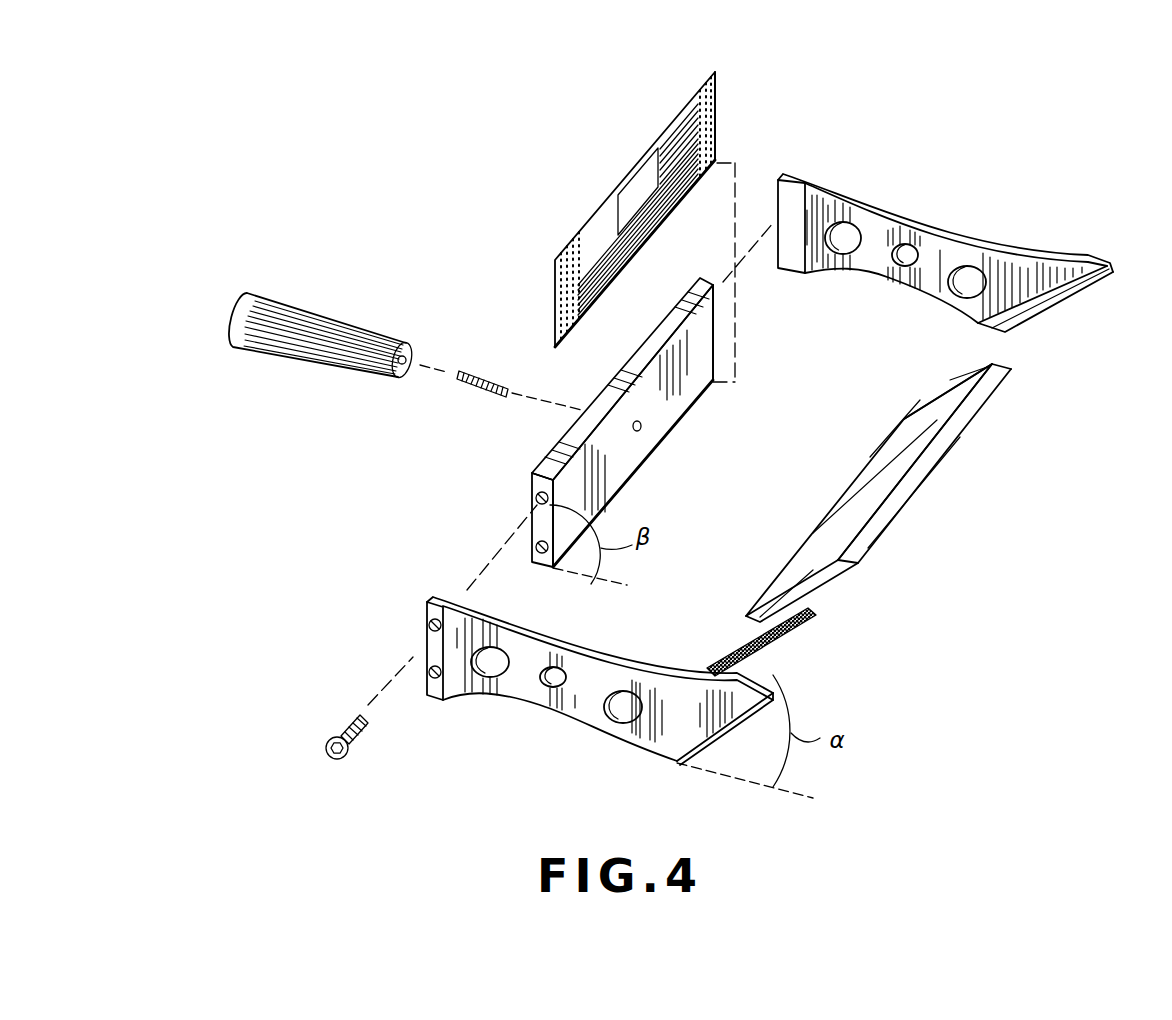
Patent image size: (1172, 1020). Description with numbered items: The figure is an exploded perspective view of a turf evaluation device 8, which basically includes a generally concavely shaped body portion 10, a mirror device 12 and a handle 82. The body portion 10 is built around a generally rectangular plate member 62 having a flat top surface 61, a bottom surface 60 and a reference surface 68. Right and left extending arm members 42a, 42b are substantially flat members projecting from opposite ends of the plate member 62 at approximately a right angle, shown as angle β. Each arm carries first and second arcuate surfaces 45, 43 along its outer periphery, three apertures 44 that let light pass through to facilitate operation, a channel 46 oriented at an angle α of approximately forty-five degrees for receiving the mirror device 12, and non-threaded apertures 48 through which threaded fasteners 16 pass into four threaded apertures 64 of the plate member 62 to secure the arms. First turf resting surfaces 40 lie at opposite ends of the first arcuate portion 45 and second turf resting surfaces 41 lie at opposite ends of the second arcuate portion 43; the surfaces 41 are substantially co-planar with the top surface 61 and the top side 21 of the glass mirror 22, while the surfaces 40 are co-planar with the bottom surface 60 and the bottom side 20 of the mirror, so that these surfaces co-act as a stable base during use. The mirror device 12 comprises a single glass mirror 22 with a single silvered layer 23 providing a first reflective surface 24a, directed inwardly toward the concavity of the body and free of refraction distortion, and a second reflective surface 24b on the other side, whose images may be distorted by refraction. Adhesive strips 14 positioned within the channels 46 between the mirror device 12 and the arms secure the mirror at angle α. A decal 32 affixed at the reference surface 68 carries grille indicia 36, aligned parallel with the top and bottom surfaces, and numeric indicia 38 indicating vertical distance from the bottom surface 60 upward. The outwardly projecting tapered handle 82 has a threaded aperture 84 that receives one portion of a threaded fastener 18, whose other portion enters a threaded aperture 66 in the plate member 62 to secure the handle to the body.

The turf evaluation device 8 is at (646, 118).
The body portion 10 is at (1078, 141).
The mirror device 12 is at (884, 540).
The adhesive strips 14 is at (733, 657).
The threaded fasteners 16 is at (327, 735).
The threaded fastener 18 is at (478, 374).
The bottom side of mirror 20 is at (742, 628).
The top side of mirror 21 is at (977, 402).
The glass mirror 22 is at (963, 435).
The silvered layer 23 is at (1000, 368).
The first reflective surface 24a is at (938, 412).
The second reflective surface 24b is at (900, 497).
The decal 32 is at (613, 195).
The grille indicia 36 is at (683, 147).
The numeric indicia 38 is at (710, 97).
The first turf resting surface 40 is at (437, 697).
The second turf resting surface 41 is at (440, 597).
The extending arm member 42a is at (573, 732).
The extending arm member 42b is at (957, 228).
The second arcuate surface 43 is at (557, 652).
The apertures 44 is at (487, 678).
The first arcuate surface 45 is at (547, 688).
The channel 46 is at (1050, 305).
The non-threaded apertures 48 is at (428, 626).
The bottom surface 60 is at (546, 572).
The top surface 61 is at (666, 328).
The plate member 62 is at (528, 465).
The threaded apertures 64 is at (537, 500).
The threaded aperture 66 is at (641, 431).
The reference surface 68 is at (717, 386).
The handle 82 is at (257, 292).
The threaded aperture 84 is at (405, 363).